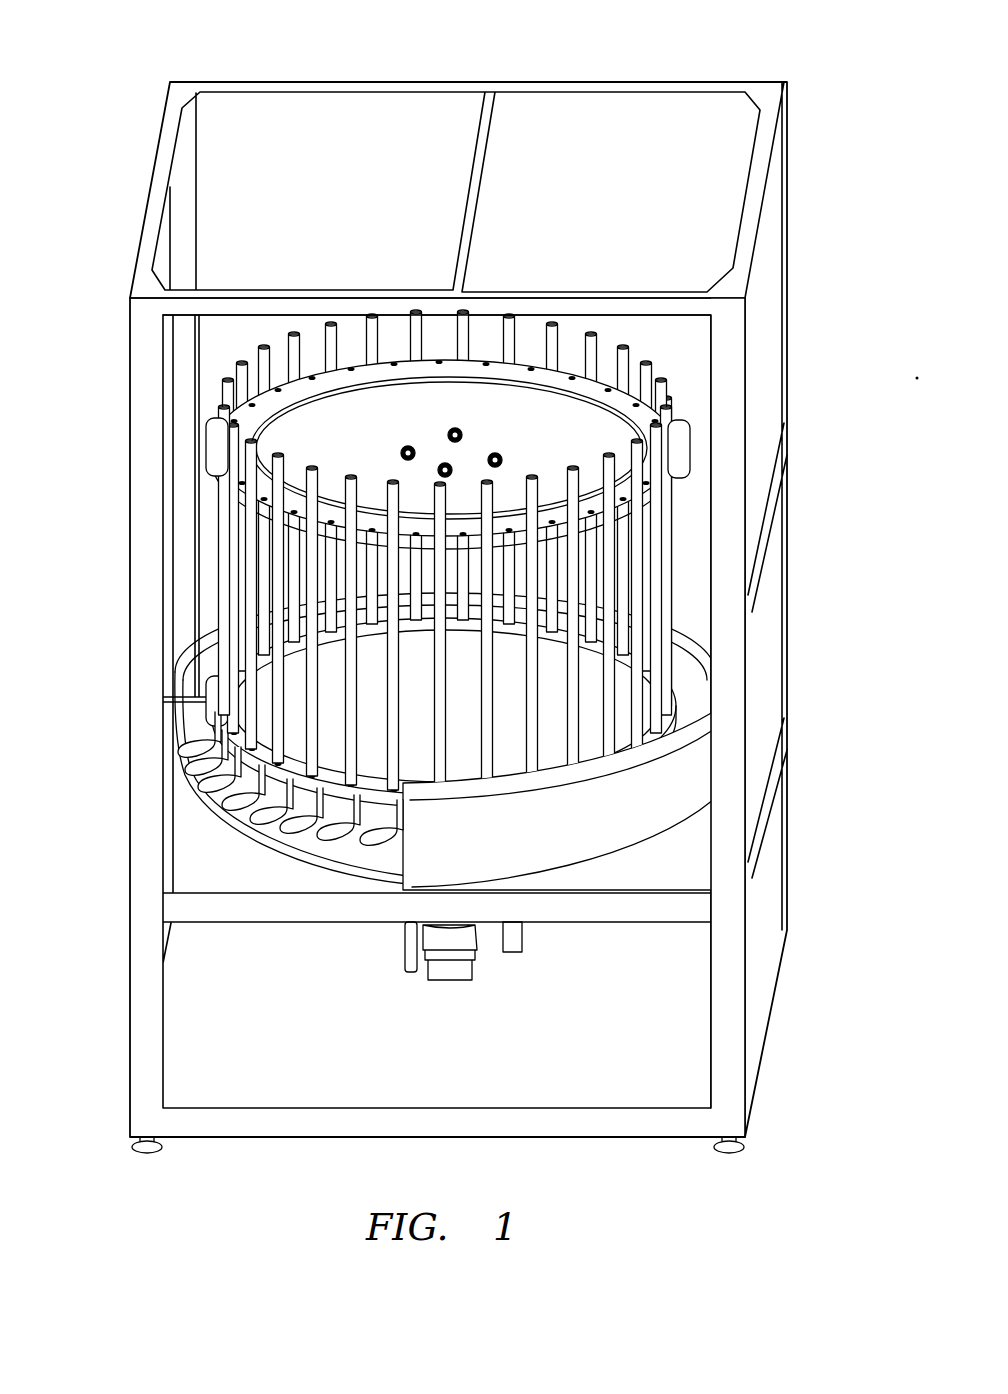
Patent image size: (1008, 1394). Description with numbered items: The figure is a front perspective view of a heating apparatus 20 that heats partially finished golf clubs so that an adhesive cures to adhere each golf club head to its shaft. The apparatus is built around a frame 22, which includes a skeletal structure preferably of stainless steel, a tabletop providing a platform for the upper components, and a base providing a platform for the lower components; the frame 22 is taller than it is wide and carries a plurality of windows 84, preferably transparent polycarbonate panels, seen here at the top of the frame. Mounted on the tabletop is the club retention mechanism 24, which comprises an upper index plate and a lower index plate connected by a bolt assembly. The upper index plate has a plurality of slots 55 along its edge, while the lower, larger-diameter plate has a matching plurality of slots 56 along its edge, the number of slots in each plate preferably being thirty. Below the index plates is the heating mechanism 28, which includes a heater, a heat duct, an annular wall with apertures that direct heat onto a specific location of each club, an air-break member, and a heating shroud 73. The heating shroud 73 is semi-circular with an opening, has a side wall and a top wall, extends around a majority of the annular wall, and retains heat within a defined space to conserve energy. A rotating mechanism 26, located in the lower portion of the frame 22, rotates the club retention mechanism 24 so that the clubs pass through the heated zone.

The heating apparatus 20 is at (830, 290).
The frame 22 is at (787, 185).
The windows 84 is at (313, 148).
The club retention mechanism 24 is at (623, 433).
The slots 55 is at (690, 458).
The heating shroud 73 is at (690, 793).
The slots 56 is at (187, 815).
The heating mechanism 28 is at (453, 980).
The rotating mechanism 26 is at (517, 936).